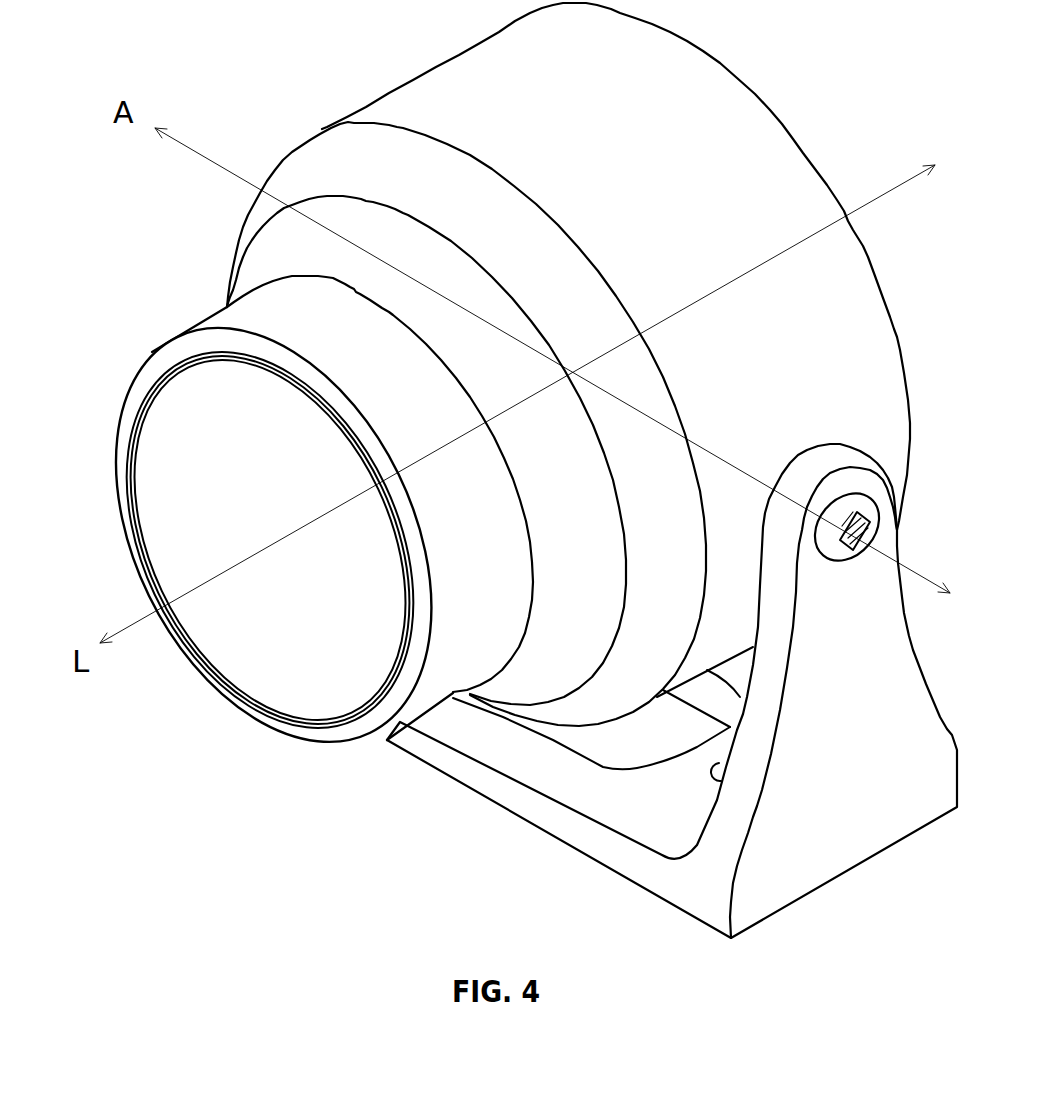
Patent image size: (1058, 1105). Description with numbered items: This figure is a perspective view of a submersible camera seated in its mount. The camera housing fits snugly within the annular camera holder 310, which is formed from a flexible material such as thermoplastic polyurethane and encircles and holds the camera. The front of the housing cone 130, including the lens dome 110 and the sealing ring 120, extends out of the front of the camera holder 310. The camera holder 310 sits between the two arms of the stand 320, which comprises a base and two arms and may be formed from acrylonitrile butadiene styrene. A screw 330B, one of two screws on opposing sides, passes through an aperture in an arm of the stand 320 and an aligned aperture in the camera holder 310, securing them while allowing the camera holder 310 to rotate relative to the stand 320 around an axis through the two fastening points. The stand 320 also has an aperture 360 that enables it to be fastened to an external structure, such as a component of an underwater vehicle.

The lens dome 110 is at (177, 525).
The sealing ring 120 is at (165, 378).
The housing cone 130 is at (225, 309).
The camera holder 310 is at (283, 159).
The stand 320 is at (807, 450).
The screw 330B is at (857, 514).
The aperture 360 is at (711, 773).